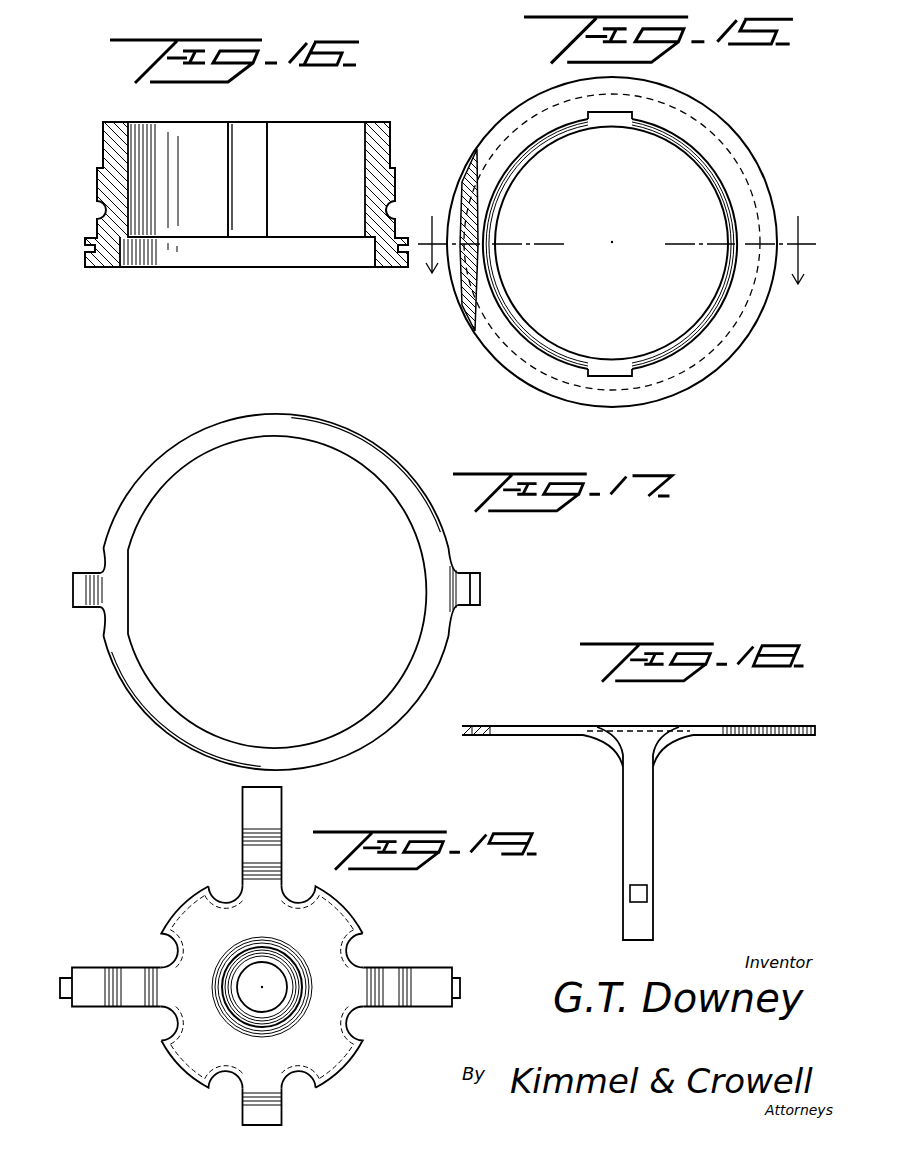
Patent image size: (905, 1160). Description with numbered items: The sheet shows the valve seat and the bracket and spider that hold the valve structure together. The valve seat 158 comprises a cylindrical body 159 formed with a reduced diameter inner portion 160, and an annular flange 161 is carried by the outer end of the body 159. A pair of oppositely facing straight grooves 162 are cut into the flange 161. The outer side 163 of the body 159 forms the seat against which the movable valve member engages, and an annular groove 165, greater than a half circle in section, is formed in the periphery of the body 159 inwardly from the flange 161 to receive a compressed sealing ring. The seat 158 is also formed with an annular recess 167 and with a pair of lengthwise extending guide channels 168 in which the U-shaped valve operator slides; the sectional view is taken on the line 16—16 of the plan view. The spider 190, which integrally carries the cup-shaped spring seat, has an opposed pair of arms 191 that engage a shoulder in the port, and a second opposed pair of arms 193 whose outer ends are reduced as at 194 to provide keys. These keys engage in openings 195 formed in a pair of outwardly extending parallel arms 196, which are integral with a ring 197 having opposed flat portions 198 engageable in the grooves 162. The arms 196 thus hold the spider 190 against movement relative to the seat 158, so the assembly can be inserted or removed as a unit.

In FIG. 16, the valve seat 158 is at (389, 114).
In FIG. 16, the cylindrical body 159 is at (396, 182).
In FIG. 16, the reduced diameter inner portion 160 is at (393, 141).
In FIG. 16, the annular flange 161 is at (401, 268).
In FIG. 15, the annular flange 161 is at (511, 364).
In FIG. 16, the straight grooves 162 is at (389, 274).
In FIG. 15, the straight grooves 162 is at (457, 274).
In FIG. 16, the outer side of the body 163 is at (102, 268).
In FIG. 16, the annular groove 165 is at (393, 208).
In FIG. 16, the annular recess 167 is at (357, 257).
In FIG. 16, the guide channels 168 is at (283, 203).
In FIG. 15, the guide channels 168 is at (594, 372).
In FIG. 15, the section line 16— 16 is at (617, 237).
In FIG. 19, the spider 190 is at (340, 931).
In FIG. 19, the arms 191 is at (243, 815).
In FIG. 19, the second pair of arms 193 is at (93, 976).
In FIG. 19, the reduced outer ends 194 is at (63, 976).
In FIG. 18, the openings 195 is at (647, 899).
In FIG. 17, the arms 196 is at (77, 594).
In FIG. 18, the arms 196 is at (651, 845).
In FIG. 17, the ring 197 is at (287, 423).
In FIG. 18, the ring 197 is at (764, 738).
In FIG. 17, the flat portions 198 is at (435, 599).